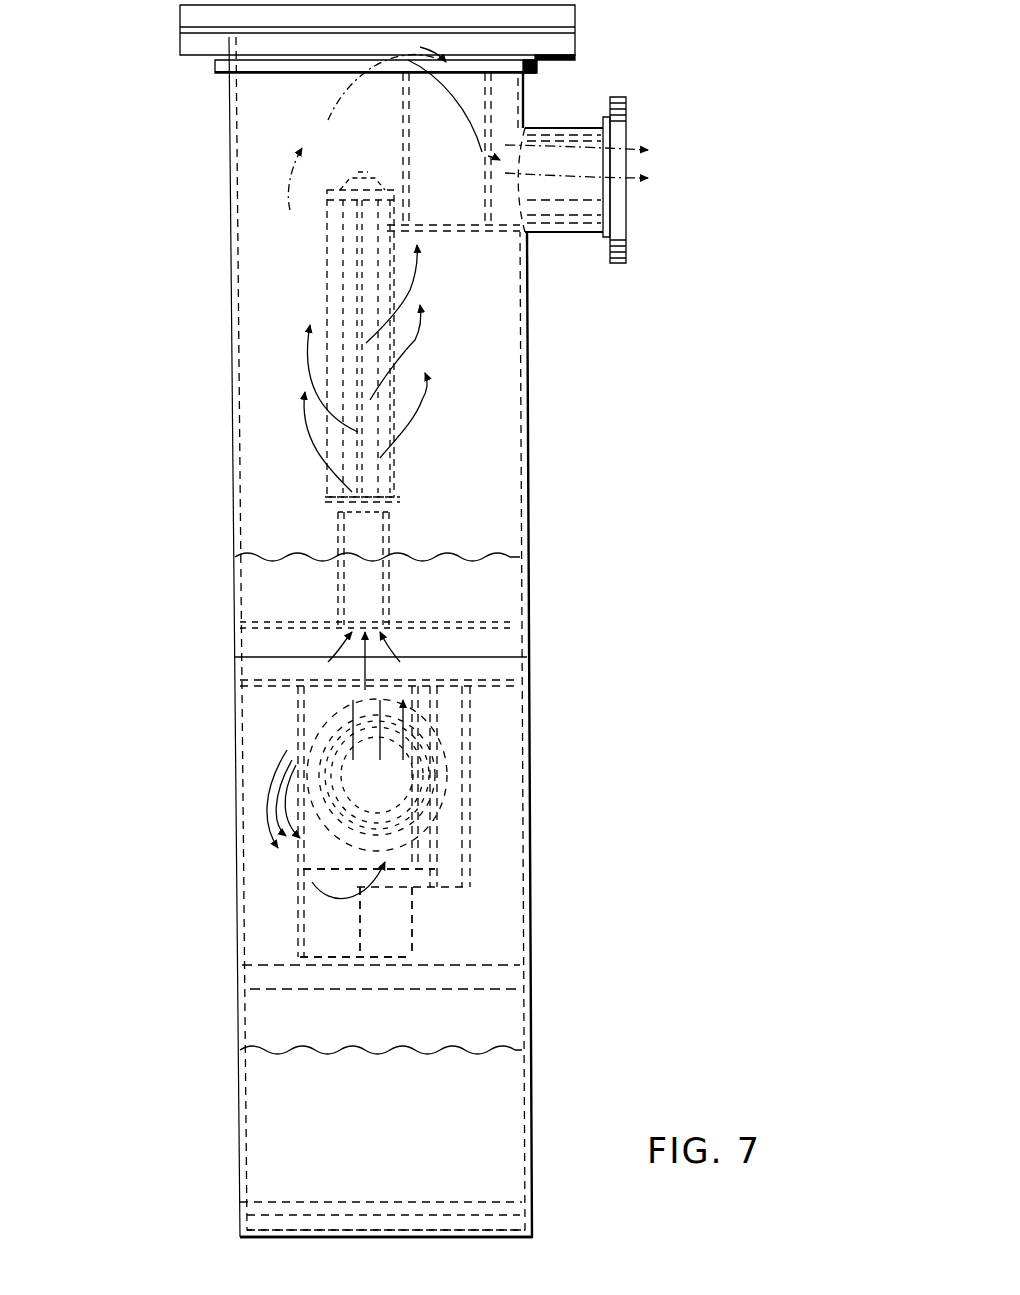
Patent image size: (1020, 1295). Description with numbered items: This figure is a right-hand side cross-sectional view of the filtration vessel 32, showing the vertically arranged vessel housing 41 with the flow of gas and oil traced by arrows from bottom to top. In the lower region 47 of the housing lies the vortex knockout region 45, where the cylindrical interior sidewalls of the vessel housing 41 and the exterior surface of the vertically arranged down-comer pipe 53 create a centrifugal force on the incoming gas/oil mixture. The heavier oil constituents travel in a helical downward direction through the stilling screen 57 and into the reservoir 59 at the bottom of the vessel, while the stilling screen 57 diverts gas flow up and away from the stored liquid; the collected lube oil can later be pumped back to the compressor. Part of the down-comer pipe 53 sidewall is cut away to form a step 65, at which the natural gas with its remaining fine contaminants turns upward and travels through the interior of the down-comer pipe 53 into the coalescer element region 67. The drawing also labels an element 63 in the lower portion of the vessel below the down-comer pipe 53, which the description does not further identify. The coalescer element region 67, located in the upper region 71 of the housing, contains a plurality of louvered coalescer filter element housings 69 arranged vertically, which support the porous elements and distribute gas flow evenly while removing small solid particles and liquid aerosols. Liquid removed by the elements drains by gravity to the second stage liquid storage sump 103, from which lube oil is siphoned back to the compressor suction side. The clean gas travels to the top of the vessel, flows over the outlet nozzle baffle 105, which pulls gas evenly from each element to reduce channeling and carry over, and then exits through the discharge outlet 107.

The filtration vessel 32 is at (660, 292).
The vessel housing 41 is at (527, 518).
The vortex knockout region 45 is at (500, 778).
The lower region 47 is at (532, 918).
The down-comer pipe 53 is at (480, 724).
The stilling screen 57 is at (465, 965).
The reservoir 59 is at (505, 1096).
The drain pipe 63 is at (360, 928).
The step 65 is at (435, 887).
The coalescer element region 67 is at (285, 280).
The coalescer filter element housing 69 is at (398, 492).
The upper region 71 is at (228, 150).
The second stage liquid storage sump 103 is at (505, 625).
The outlet nozzle baffle 105 is at (385, 135).
The discharge outlet 107 is at (630, 215).